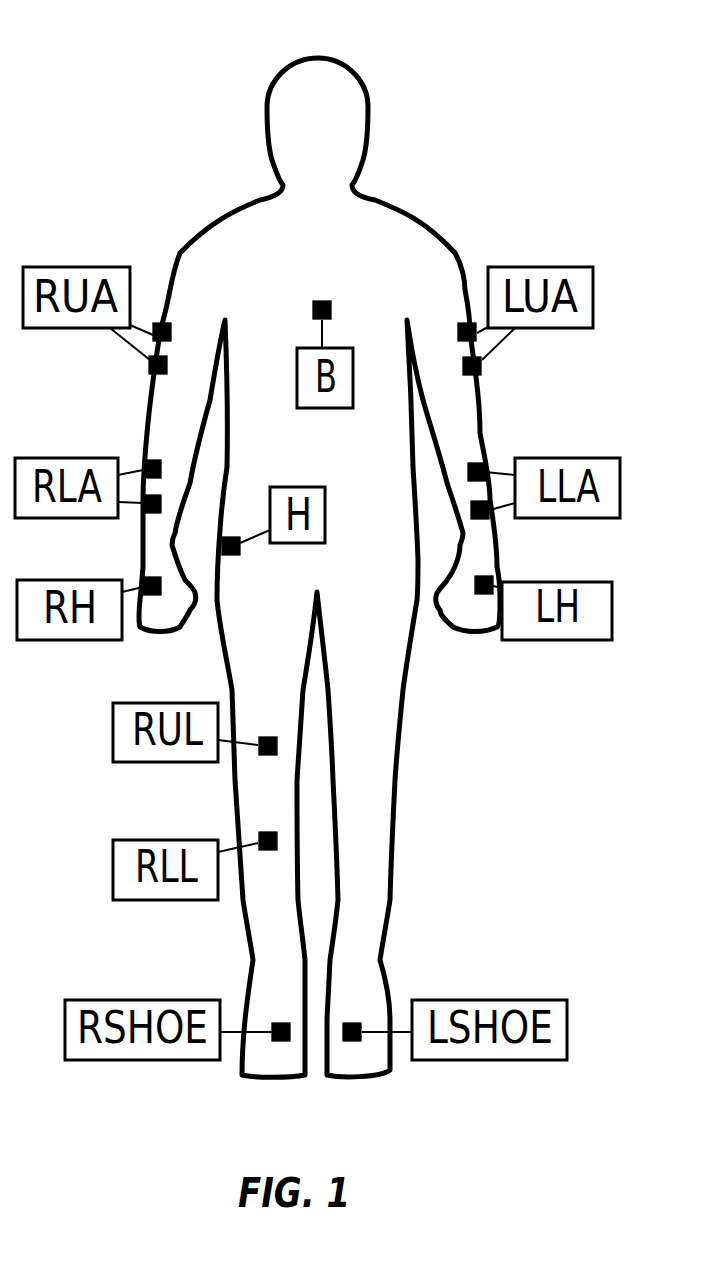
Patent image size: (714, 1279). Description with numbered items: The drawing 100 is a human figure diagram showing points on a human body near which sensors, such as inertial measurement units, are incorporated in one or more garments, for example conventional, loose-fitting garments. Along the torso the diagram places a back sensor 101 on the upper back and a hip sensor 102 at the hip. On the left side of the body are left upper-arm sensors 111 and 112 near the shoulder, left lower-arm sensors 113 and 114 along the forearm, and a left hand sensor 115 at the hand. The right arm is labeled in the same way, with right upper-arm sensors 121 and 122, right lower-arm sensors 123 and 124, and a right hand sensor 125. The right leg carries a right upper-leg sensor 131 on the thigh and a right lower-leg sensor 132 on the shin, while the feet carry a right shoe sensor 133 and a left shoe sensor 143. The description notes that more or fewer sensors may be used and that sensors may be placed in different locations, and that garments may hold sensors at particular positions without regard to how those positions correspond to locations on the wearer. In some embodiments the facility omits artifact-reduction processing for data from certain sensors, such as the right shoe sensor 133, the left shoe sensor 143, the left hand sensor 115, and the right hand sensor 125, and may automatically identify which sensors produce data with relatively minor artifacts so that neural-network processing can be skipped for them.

The drawing 100 is at (538, 92).
The back sensor 101 is at (327, 301).
The hip sensor 102 is at (222, 555).
The left upper-arm sensor 111 is at (465, 323).
The left upper-arm sensor 112 is at (478, 375).
The left lower-arm sensor 113 is at (476, 463).
The left lower-arm sensor 114 is at (485, 518).
The left hand sensor 115 is at (489, 577).
The right upper-arm sensor 121 is at (160, 323).
The right upper-arm sensor 122 is at (150, 370).
The right lower-arm sensor 123 is at (143, 462).
The right lower-arm sensor 124 is at (143, 510).
The right hand sensor 125 is at (143, 580).
The right upper-leg sensor 131 is at (259, 752).
The right lower-leg sensor 132 is at (259, 835).
The right shoe sensor 133 is at (275, 1042).
The left shoe sensor 143 is at (350, 1042).